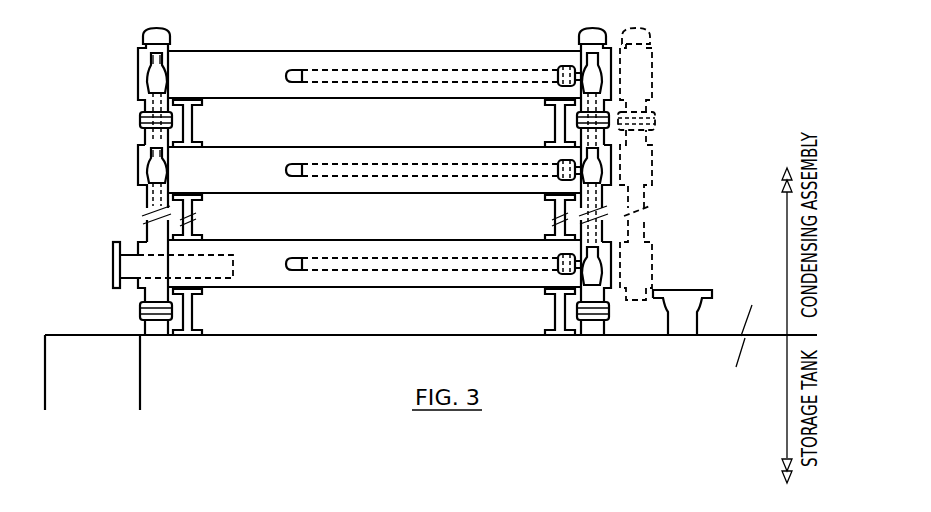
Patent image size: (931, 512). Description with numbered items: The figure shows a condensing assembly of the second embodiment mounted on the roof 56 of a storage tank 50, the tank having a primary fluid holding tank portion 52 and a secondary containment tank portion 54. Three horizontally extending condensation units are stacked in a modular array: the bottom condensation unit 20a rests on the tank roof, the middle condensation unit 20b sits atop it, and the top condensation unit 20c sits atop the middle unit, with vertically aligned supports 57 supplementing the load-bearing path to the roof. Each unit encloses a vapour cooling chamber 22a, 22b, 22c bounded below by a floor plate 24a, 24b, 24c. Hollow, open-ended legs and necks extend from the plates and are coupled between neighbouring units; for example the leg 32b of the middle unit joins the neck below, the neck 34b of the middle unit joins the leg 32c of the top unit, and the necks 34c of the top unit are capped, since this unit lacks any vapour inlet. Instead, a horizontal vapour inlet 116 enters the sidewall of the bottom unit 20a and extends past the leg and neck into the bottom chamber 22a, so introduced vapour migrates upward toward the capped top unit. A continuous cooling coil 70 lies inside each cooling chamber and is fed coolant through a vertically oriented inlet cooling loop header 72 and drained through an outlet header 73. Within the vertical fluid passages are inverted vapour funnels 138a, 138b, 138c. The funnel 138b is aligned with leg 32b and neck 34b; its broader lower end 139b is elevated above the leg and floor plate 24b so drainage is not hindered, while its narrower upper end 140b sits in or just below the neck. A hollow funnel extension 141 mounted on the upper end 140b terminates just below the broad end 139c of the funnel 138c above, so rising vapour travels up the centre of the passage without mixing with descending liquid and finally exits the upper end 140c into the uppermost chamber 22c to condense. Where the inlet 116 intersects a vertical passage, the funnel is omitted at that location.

The bottom condensation unit 20a is at (122, 303).
The middle condensation unit 20b is at (710, 190).
The top condensation unit 20c is at (710, 97).
The bottom vapour cooling chamber 22a is at (270, 250).
The middle vapour cooling chamber 22b is at (275, 157).
The top vapour cooling chamber 22c is at (280, 63).
The floor plate 24a is at (373, 292).
The floor plate 24b is at (380, 197).
The floor plate 24c is at (368, 105).
The leg 32b is at (140, 203).
The leg 32c is at (168, 107).
The neck 34b is at (143, 137).
The neck 34c is at (141, 46).
The storage tank 50 is at (704, 402).
The primary fluid holding tank portion 52 is at (144, 383).
The secondary containment tank portion 54 is at (52, 383).
The storage tank roof 56 is at (302, 340).
The support 57 is at (548, 312).
The cooling coil 70 is at (427, 77).
The inlet cooling loop header 72 is at (655, 52).
The outlet header 73 is at (660, 52).
The horizontal vapour inlet 116 is at (110, 267).
The vapour funnel 138a is at (593, 267).
The vapour funnel 138b is at (148, 173).
The vapour funnel 138c is at (152, 81).
The broader lower end of funnel 139b is at (167, 182).
The broader lower end of funnel 139c is at (167, 90).
The upper end of funnel 140b is at (164, 151).
The upper end of funnel 140c is at (167, 63).
The funnel extension 141 is at (170, 137).